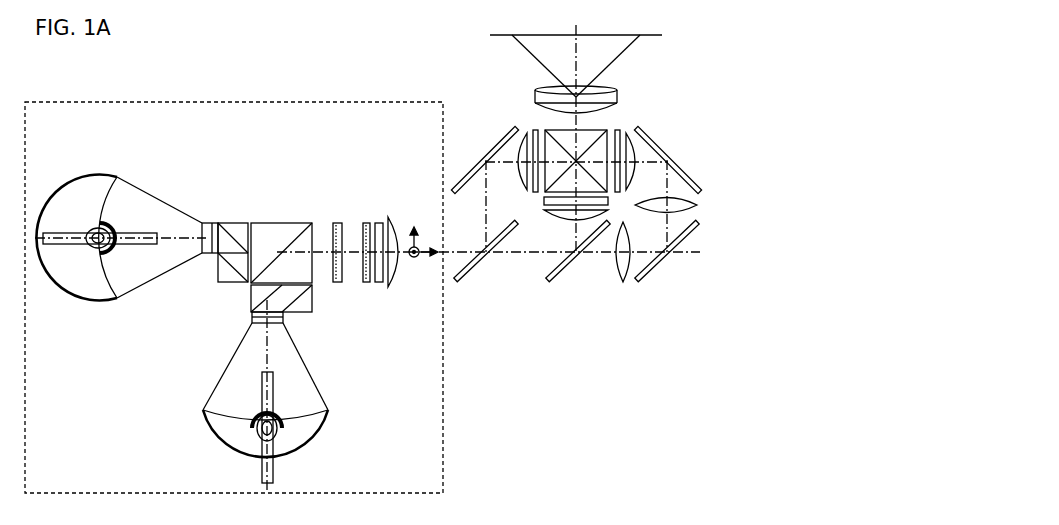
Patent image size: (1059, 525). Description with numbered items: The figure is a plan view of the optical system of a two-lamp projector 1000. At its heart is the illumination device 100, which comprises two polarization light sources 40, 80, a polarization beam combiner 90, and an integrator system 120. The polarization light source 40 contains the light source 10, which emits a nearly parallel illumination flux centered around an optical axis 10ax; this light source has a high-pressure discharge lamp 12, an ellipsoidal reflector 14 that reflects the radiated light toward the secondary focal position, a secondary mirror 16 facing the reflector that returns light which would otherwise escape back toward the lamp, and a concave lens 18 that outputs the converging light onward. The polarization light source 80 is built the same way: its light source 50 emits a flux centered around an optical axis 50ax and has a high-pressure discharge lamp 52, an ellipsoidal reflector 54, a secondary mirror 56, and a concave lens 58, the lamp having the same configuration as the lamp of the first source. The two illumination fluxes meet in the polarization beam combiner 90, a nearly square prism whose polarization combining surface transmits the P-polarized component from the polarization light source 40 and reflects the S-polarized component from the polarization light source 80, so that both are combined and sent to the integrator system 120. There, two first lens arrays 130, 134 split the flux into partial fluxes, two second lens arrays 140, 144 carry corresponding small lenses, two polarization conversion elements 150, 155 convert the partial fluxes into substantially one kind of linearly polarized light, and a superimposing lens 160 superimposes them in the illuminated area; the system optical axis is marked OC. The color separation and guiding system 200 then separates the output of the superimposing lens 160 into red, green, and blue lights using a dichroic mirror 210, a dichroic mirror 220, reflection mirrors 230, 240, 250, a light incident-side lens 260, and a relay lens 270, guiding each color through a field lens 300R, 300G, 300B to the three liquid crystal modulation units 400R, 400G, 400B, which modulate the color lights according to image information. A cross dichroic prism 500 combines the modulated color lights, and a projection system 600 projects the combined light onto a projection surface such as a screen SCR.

The projector 1000 is at (332, 86).
The illumination device 100 is at (443, 468).
The light source 10 is at (125, 261).
The optical axis 10ax is at (38, 230).
The high-pressure discharge lamp 12 is at (105, 258).
The ellipsoidal reflector 14 is at (87, 284).
The secondary mirror 16 is at (115, 252).
The concave lens 18 is at (202, 257).
The polarization light source 40 is at (153, 372).
The polarization light source 80 is at (191, 407).
The polarization beam combiner 90 is at (273, 215).
The light source 50 is at (307, 395).
The optical axis 50ax is at (270, 490).
The high-pressure discharge lamp 52 is at (278, 427).
The ellipsoidal reflector 54 is at (322, 432).
The secondary mirror 56 is at (285, 418).
The concave lens 58 is at (285, 324).
The integrator system 120 is at (350, 156).
The first lens array 130 is at (335, 223).
The first lens array 134 is at (337, 283).
The second lens array 140 is at (367, 223).
The second lens array 144 is at (367, 283).
The polarization conversion element 150 is at (379, 223).
The polarization conversion element 155 is at (378, 283).
The superimposing lens 160 is at (400, 287).
The system optical axis OC is at (406, 244).
The color separation and guiding system 200 is at (591, 347).
The dichroic mirror 210 is at (468, 277).
The dichroic mirror 220 is at (550, 283).
The reflection mirror 230 is at (478, 170).
The reflection mirror 240 is at (647, 277).
The reflection mirror 250 is at (688, 176).
The light incident-side lens 260 is at (627, 280).
The relay lens 270 is at (697, 205).
The field lens (red) 300R is at (521, 134).
The field lens (green) 300G is at (607, 223).
The field lens (blue) 300B is at (638, 134).
The liquid crystal modulation unit 400R is at (536, 130).
The liquid crystal modulation unit 400G is at (542, 203).
The liquid crystal modulation unit 400B is at (614, 131).
The cross dichroic prism 500 is at (606, 128).
The projection system 600 is at (535, 100).
The screen SCR is at (653, 35).